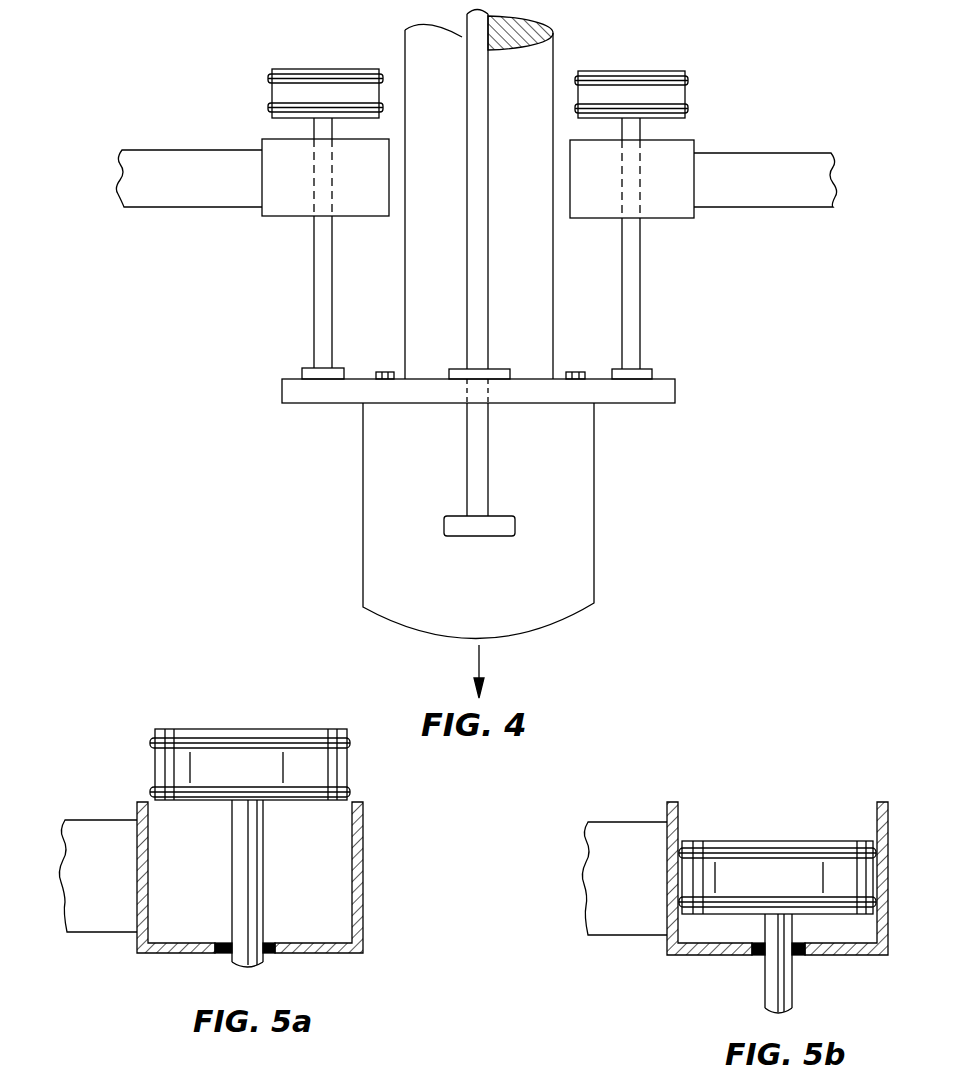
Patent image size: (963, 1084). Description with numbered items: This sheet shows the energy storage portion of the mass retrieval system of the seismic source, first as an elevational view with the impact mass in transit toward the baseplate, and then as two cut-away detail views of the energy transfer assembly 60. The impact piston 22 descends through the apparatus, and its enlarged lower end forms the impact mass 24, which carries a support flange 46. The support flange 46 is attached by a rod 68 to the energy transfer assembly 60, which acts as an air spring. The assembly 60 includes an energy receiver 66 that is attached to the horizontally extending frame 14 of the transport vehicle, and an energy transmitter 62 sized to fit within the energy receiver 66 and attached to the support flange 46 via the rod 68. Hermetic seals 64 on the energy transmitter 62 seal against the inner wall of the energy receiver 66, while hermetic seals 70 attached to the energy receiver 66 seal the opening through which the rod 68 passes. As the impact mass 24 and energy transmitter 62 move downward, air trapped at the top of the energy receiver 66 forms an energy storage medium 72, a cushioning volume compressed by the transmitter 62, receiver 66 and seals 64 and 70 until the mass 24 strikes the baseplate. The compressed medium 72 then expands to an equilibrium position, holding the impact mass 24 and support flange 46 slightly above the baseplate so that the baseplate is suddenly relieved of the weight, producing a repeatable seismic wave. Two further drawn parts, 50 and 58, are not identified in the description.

In FIG. 4, the horizontally extending frame 14 is at (183, 190).
In FIG. 5A, the horizontally extending frame 14 is at (98, 915).
In FIG. 5B, the horizontally extending frame 14 is at (620, 925).
In FIG. 4, the impact piston 22 is at (527, 222).
In FIG. 4, the impact mass 24 is at (572, 625).
In FIG. 4, the support flange 46 is at (676, 384).
In FIG. 4, the drive shaft 50 is at (482, 475).
In FIG. 4, the paddle 58 is at (493, 532).
In FIG. 4, the energy transfer assembly 60 is at (678, 202).
In FIG. 5A, the energy transfer assembly 60 is at (288, 840).
In FIG. 5B, the energy transfer assembly 60 is at (730, 890).
In FIG. 4, the energy transmitter 62 is at (624, 71).
In FIG. 5A, the energy transmitter 62 is at (264, 741).
In FIG. 5B, the energy transmitter 62 is at (777, 843).
In FIG. 4, the hermetic seals 64 is at (576, 100).
In FIG. 5A, the hermetic seals 64 is at (350, 790).
In FIG. 5B, the hermetic seals 64 is at (838, 900).
In FIG. 4, the energy receiver 66 is at (677, 196).
In FIG. 5A, the energy receiver 66 is at (264, 899).
In FIG. 5B, the energy receiver 66 is at (782, 880).
In FIG. 4, the rod 68 is at (634, 331).
In FIG. 5A, the rod 68 is at (253, 912).
In FIG. 5B, the rod 68 is at (773, 987).
In FIG. 5A, the hermetic seals 70 is at (266, 950).
In FIG. 5B, the hermetic seals 70 is at (792, 958).
In FIG. 5A, the energy storage medium 72 is at (177, 922).
In FIG. 5B, the energy storage medium 72 is at (717, 930).